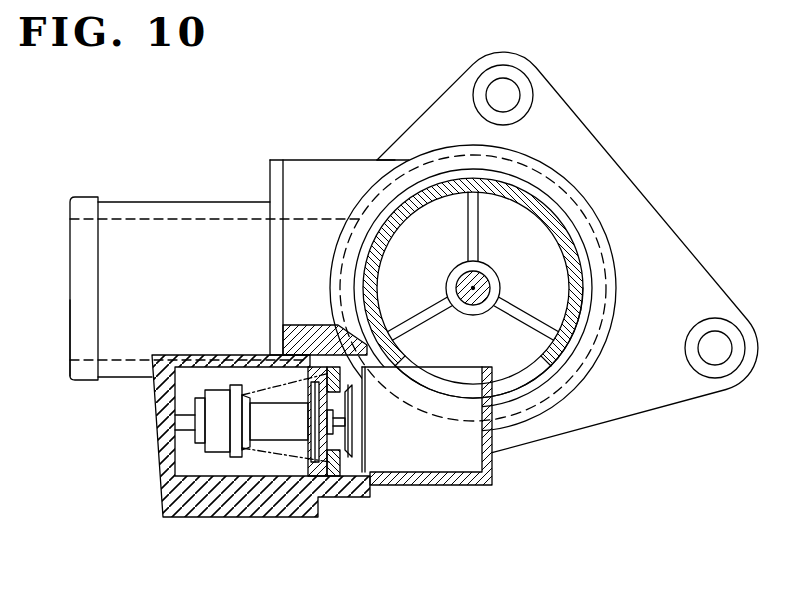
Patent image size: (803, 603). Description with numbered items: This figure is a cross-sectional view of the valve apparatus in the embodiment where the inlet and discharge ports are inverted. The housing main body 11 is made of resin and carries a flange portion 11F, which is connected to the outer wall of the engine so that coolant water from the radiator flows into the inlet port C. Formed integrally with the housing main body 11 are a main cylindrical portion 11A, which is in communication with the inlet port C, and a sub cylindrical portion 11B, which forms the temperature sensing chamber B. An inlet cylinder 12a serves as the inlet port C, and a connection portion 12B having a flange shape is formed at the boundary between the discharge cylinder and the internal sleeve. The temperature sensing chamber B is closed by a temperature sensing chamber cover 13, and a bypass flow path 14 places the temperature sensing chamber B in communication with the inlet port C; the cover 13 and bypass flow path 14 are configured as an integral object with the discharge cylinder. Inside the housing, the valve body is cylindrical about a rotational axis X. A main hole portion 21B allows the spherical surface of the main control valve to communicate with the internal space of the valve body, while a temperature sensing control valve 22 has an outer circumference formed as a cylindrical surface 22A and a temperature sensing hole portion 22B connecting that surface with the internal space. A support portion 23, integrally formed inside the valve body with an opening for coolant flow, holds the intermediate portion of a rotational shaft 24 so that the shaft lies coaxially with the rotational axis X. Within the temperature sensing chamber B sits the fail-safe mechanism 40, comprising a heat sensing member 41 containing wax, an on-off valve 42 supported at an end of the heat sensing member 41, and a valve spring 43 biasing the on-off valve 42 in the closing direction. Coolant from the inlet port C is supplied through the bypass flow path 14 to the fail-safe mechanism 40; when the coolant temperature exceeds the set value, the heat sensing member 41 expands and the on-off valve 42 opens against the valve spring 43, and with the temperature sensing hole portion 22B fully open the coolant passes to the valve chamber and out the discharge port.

The housing main body 11 is at (524, 158).
The main cylindrical portion 11A is at (326, 172).
The sub cylindrical portion 11B is at (335, 500).
The flange portion 11F is at (432, 108).
The connection portion 12B is at (270, 183).
The inlet cylinder 12a is at (126, 373).
The temperature sensing chamber cover 13 is at (163, 496).
The bypass flow path 14 is at (262, 403).
The main hole portion 21B is at (378, 158).
The temperature sensing control valve 22 is at (578, 293).
The cylindrical surface 22A is at (566, 257).
The temperature sensing hole portion 22B is at (462, 386).
The support portion 23 is at (477, 226).
The rotational shaft 24 is at (462, 270).
The fail-safe mechanism 40 is at (210, 452).
The heat sensing member 41 is at (258, 388).
The on-off valve 42 is at (363, 436).
The valve spring 43 is at (277, 352).
The temperature sensing chamber B is at (403, 385).
The inlet port C is at (66, 263).
The rotational axis X is at (473, 288).